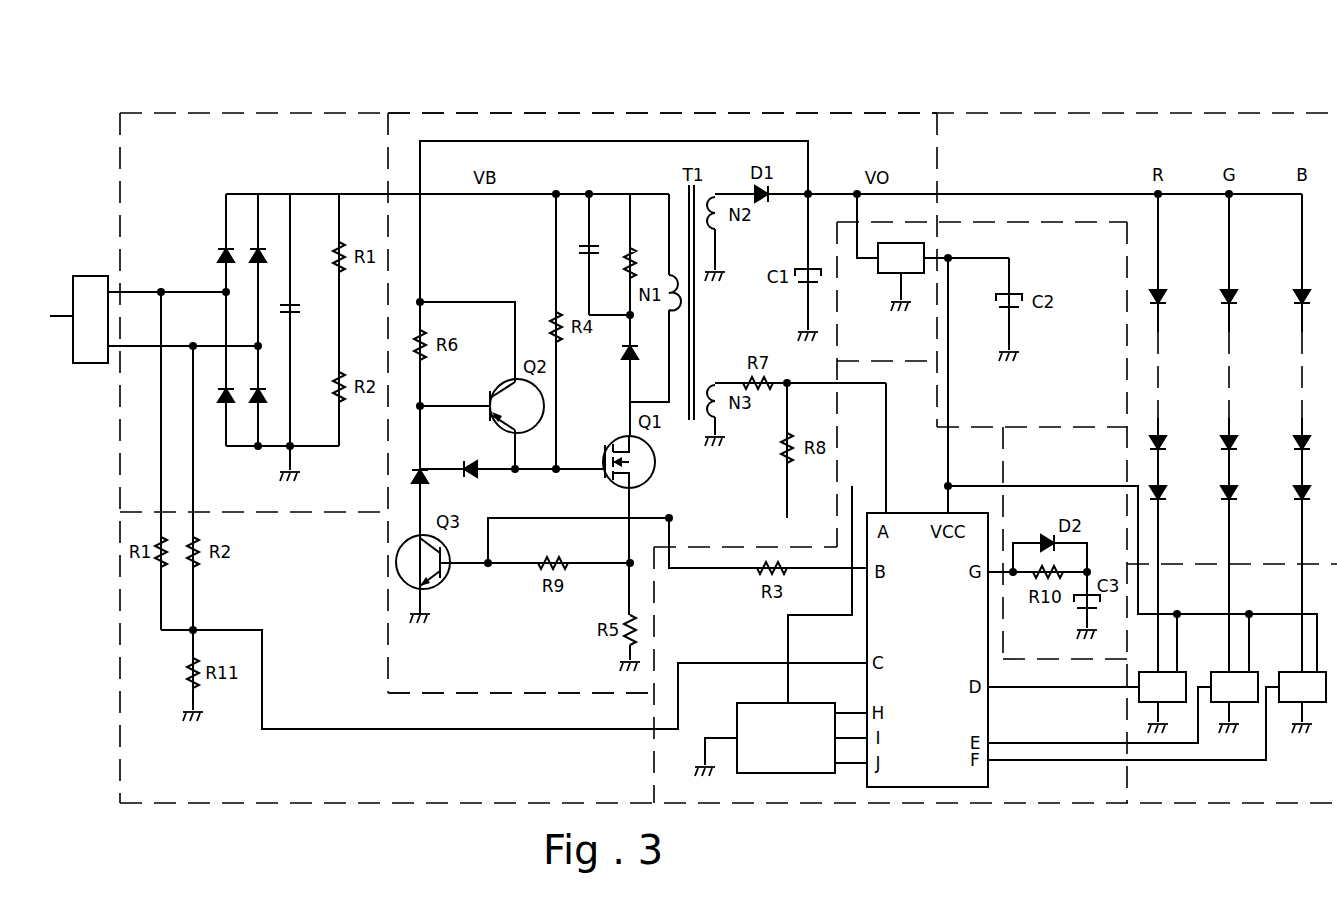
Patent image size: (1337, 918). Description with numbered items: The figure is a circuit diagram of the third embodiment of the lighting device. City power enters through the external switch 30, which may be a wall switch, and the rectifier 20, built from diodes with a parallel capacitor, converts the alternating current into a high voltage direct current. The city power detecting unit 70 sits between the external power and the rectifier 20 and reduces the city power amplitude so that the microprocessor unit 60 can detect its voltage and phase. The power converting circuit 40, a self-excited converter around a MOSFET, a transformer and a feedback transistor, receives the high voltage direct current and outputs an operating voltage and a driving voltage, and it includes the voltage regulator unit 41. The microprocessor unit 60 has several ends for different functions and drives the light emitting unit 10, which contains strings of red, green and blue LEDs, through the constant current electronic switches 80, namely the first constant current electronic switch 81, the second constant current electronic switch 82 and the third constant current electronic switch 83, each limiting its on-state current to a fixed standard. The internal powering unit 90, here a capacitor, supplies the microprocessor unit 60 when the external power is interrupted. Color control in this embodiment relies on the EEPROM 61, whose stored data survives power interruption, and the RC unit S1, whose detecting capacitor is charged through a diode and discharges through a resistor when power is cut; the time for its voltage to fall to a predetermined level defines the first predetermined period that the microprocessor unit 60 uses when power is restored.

The light emitting unit 10 is at (1237, 127).
The rectifier 20 is at (258, 127).
The external switch 30 is at (93, 293).
The power converting circuit 40 is at (706, 127).
The voltage regulator unit 41 is at (900, 243).
The microprocessor unit 60 is at (822, 793).
The EEPROM 61 is at (765, 758).
The city power detecting unit 70 is at (460, 795).
The constant current electronic switches 80 is at (1130, 836).
The first constant current electronic switch 81 is at (1172, 700).
The second constant current electronic switch 82 is at (1248, 700).
The third constant current electronic switch 83 is at (1315, 700).
The internal powering unit 90 is at (1058, 222).
The RC unit S1 is at (1050, 647).